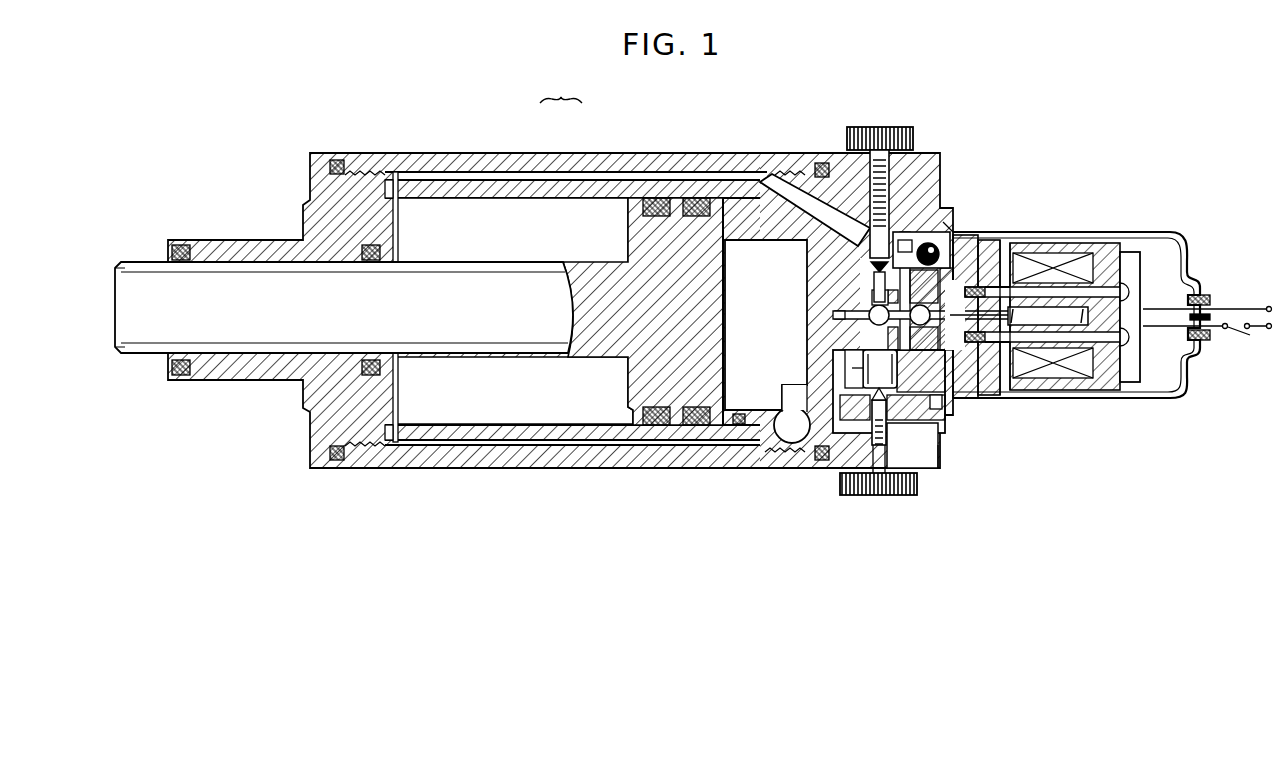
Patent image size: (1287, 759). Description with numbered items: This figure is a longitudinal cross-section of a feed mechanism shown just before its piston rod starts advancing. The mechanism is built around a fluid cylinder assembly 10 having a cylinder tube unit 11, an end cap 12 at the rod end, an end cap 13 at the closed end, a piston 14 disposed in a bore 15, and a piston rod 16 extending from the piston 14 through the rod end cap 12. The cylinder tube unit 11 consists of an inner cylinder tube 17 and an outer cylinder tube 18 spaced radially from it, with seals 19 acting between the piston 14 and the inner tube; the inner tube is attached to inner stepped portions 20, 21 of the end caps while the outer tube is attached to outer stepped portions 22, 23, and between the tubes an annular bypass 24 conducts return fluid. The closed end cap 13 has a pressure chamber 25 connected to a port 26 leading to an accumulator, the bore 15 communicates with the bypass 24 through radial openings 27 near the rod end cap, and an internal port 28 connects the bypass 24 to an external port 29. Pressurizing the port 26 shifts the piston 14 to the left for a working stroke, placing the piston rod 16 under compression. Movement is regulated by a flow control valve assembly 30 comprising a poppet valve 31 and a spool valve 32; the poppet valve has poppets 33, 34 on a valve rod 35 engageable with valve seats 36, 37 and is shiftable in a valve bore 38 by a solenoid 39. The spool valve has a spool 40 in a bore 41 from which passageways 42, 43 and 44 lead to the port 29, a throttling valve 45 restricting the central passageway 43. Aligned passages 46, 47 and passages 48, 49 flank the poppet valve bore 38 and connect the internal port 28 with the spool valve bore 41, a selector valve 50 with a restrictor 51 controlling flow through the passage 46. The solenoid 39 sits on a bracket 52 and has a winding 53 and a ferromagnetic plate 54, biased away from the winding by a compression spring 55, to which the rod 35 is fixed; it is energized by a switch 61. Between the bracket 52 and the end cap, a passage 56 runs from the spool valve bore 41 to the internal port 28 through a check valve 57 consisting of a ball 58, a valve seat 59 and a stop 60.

The fluid cylinder assembly 10 is at (519, 488).
The cylinder tube unit 11 is at (561, 90).
The end cap for the rod end 12 is at (325, 213).
The end cap for the closed end 13 is at (945, 192).
The piston 14 is at (645, 250).
The bore 15 is at (447, 202).
The piston rod 16 is at (482, 342).
The inner cylinder tube 17 is at (543, 183).
The outer cylinder tube 18 is at (588, 163).
The rings or seals 19 is at (692, 428).
The inner stepped portion 20 is at (386, 172).
The inner stepped portion 21 is at (737, 275).
The outer stepped portion 22 is at (355, 160).
The outer stepped portion 23 is at (787, 175).
The annular bypass passage 24 is at (497, 184).
The pressure chamber 25 is at (697, 194).
The port 26 is at (762, 452).
The radial openings 27 is at (407, 190).
The internal port 28 is at (855, 235).
The external port 29 is at (940, 458).
The flow control valve assembly 30 is at (878, 333).
The poppet valve 31 is at (853, 308).
The spool valve 32 is at (845, 375).
The poppet 33 is at (868, 306).
The poppet 34 is at (946, 330).
The valve rod 35 is at (1018, 390).
The valve seat 36 is at (870, 293).
The valve seat 37 is at (940, 290).
The valve bore 38 is at (880, 303).
The solenoid actuator 39 is at (1161, 232).
The spool 40 is at (892, 378).
The spool valve bore 41 is at (848, 356).
The passageway 42 is at (788, 444).
The central passageway 43 is at (854, 420).
The passageway 44 is at (945, 432).
The throttling valve 45 is at (866, 458).
The passage 46 is at (866, 285).
The passage 47 is at (849, 322).
The passage 48 is at (902, 265).
The passage 49 is at (948, 400).
The selector valve 50 is at (892, 199).
The restrictor 51 is at (868, 262).
The bracket 52 is at (984, 382).
The winding 53 is at (1087, 262).
The ferromagnetic plate 54 is at (1036, 268).
The compression spring 55 is at (1074, 324).
The passage 56 is at (990, 265).
The check valve 57 is at (970, 250).
The ball 58 is at (962, 230).
The valve seat 59 is at (955, 212).
The stop 60 is at (888, 262).
The switch 61 is at (1236, 334).